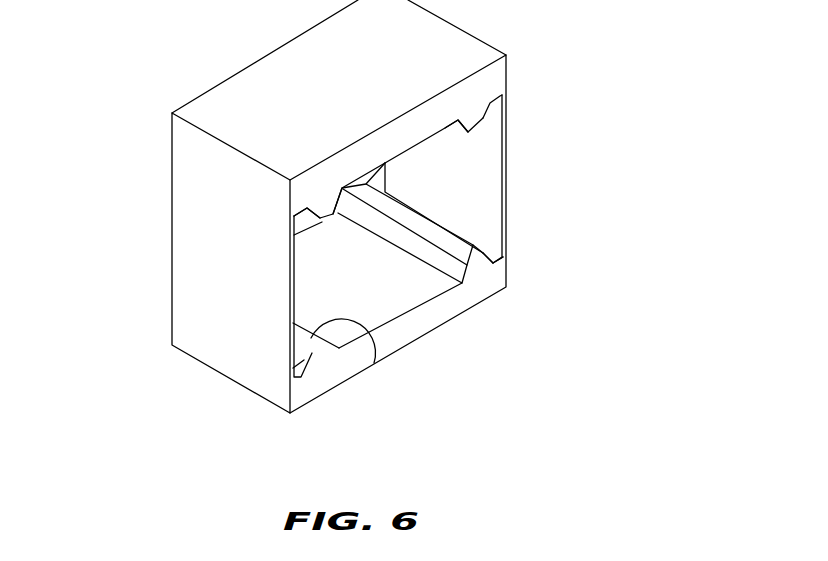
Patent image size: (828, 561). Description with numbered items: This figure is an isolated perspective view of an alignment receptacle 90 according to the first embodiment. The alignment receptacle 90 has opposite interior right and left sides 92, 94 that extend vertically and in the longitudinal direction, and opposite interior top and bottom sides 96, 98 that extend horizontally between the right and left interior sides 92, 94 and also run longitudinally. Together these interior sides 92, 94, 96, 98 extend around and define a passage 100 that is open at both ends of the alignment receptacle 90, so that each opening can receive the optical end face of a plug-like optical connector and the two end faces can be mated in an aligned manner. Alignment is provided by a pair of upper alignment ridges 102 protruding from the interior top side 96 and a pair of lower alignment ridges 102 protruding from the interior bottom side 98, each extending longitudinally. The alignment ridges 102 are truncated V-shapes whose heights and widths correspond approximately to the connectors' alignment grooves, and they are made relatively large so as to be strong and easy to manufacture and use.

The alignment receptacle 90 is at (146, 148).
The interior right side 92 is at (486, 176).
The interior left side 94 is at (296, 296).
The interior top side 96 is at (413, 146).
The interior bottom side 98 is at (390, 278).
The passage 100 is at (368, 295).
The alignment ridges 102 is at (322, 207).